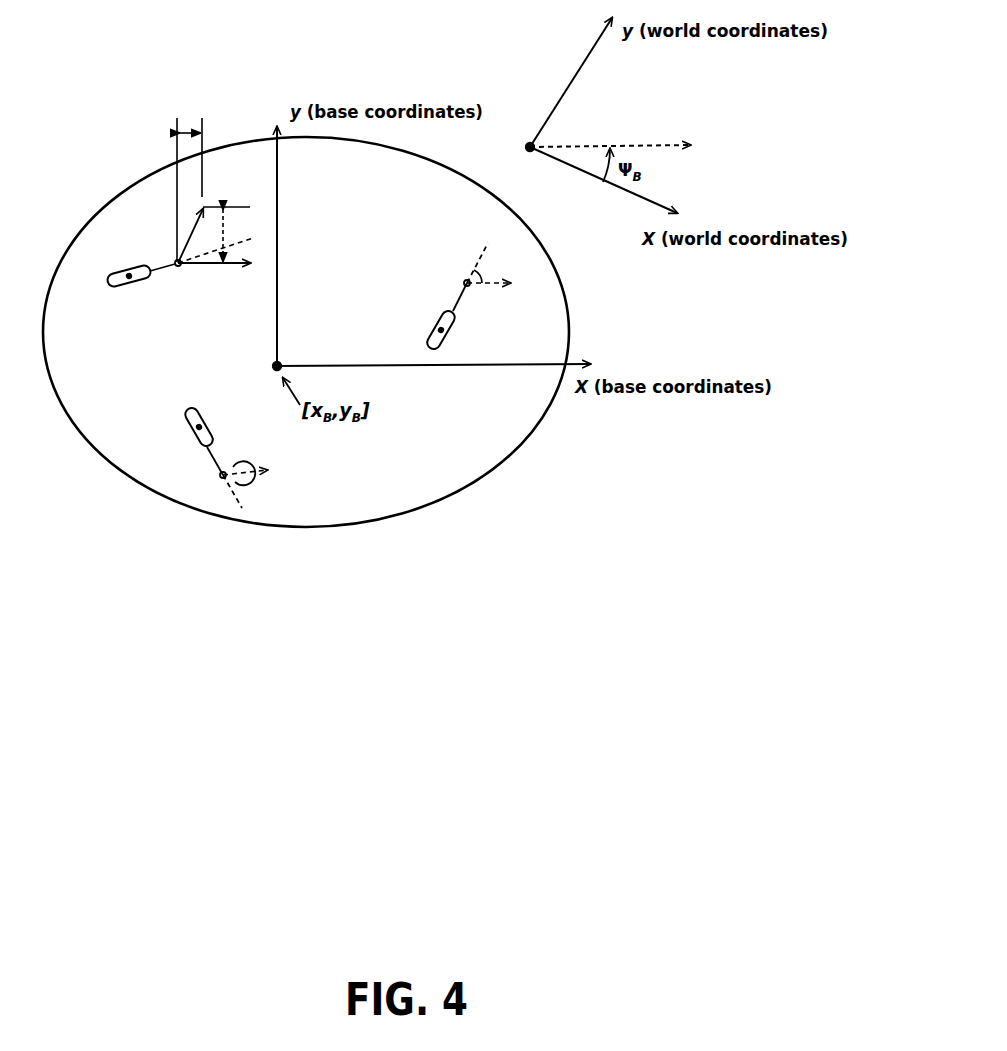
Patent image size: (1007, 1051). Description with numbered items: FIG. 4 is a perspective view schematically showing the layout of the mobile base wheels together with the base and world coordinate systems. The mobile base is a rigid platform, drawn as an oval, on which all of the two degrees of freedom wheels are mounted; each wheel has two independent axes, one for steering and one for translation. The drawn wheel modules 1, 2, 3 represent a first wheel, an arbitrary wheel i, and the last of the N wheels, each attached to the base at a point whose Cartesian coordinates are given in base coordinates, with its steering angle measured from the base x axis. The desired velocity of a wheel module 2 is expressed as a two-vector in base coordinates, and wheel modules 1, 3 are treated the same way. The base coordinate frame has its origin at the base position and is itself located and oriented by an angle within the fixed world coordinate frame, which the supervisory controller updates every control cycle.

The wheel module W1 with position [x_W1,y_W1] and steering angle θ_W1 1 is at (455, 277).
The wheel module WI with position [x_WI,y_WI], velocity components and steering angl 2 is at (170, 276).
The wheel module WN with position [x_WN,y_WN] and steering angle θ_WN 3 is at (240, 478).